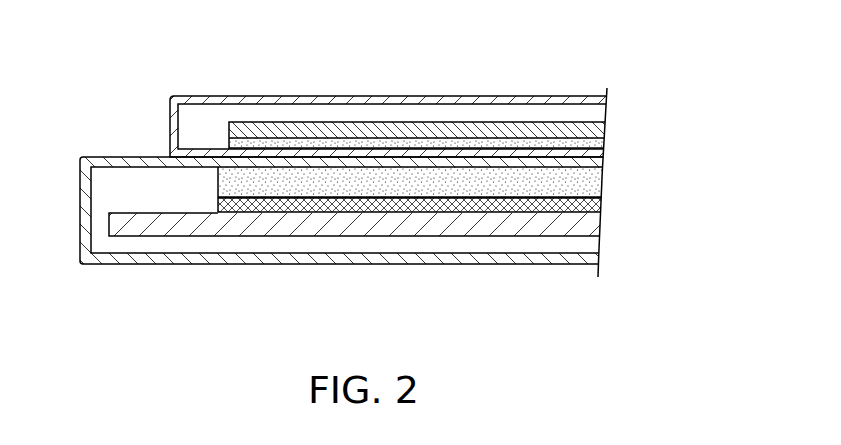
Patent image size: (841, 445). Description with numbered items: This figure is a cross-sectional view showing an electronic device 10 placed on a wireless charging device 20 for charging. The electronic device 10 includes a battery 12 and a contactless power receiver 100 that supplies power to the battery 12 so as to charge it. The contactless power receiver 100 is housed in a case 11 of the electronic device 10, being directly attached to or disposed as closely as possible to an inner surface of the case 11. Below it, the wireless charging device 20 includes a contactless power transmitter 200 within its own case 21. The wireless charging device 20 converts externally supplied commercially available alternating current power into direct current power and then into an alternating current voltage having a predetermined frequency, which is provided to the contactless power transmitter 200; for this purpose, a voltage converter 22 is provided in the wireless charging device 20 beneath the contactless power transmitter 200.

The electronic device 10 is at (509, 80).
The case 11 is at (340, 97).
The battery 12 is at (596, 133).
The contactless power receiver 100 is at (597, 143).
The contactless power transmitter 200 is at (619, 170).
The wireless charging device 20 is at (508, 279).
The case 21 is at (346, 258).
The voltage converter 22 is at (597, 227).